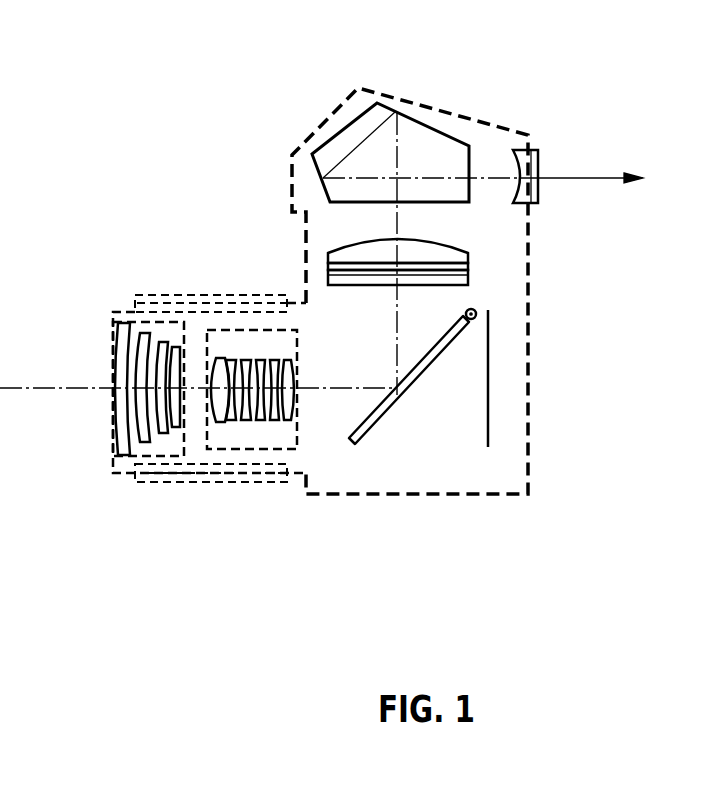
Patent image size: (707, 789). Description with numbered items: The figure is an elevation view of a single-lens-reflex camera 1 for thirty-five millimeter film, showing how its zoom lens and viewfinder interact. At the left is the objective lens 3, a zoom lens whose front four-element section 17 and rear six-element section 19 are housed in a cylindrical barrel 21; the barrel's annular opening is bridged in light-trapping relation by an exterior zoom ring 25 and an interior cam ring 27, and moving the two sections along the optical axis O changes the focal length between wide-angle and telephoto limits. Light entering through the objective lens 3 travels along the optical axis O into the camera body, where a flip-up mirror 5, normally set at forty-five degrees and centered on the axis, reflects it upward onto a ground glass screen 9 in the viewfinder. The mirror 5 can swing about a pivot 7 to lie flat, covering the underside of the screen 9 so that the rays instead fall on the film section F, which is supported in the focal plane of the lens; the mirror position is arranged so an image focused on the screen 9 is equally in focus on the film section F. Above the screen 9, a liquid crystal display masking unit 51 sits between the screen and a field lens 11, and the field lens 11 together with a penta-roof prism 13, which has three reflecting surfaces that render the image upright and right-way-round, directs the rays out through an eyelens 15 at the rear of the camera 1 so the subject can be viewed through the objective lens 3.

The single-lens-reflex camera 1 is at (533, 441).
The objective lens 3 is at (115, 413).
The flip-up mirror 5 is at (385, 413).
The pivot 7 is at (466, 312).
The ground glass screen 9 is at (467, 280).
The field lens 11 is at (443, 257).
The penta-roof prism 13 is at (380, 110).
The eyelens 15 is at (538, 158).
The front four-element section 17 is at (147, 327).
The rear six-element section 19 is at (240, 333).
The cylindrical barrel 21 is at (120, 311).
The exterior zoom ring 25 is at (152, 297).
The interior cam ring 27 is at (197, 307).
The liquid crystal display masking unit 51 is at (467, 268).
The optical axis O is at (53, 388).
The film section F is at (487, 435).